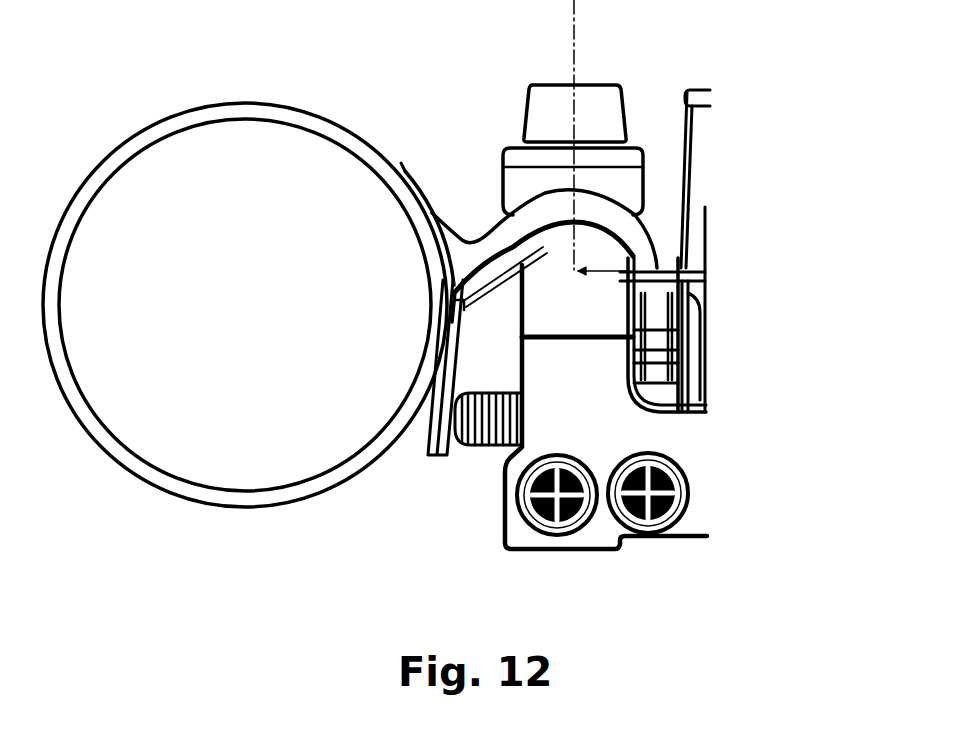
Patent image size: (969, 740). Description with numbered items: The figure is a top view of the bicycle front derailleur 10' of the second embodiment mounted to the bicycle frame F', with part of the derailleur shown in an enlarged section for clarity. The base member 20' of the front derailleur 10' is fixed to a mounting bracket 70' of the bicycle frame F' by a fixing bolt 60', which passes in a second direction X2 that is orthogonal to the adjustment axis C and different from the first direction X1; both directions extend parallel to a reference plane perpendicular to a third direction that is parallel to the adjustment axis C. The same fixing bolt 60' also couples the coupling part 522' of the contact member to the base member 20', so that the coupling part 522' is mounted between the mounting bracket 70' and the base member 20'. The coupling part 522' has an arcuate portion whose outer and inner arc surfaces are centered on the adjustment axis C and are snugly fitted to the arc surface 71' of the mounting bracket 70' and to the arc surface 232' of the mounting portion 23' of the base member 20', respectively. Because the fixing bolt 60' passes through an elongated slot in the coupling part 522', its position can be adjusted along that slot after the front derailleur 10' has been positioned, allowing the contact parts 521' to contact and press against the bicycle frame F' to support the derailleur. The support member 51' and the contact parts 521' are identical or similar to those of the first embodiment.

The bicycle frame F' is at (245, 277).
The mounting bracket 70' is at (529, 221).
The arc surface 71' is at (640, 240).
The fixing bolt 60' is at (584, 114).
The second direction X2 is at (572, 50).
The adjustment axis C is at (630, 271).
The support member 51' is at (579, 427).
The contact part 521' is at (354, 434).
The coupling part 522' is at (604, 351).
The first direction X1 is at (428, 410).
The base member 20' is at (698, 310).
The mounting portion 23' is at (691, 250).
The arc surface 232' is at (775, 346).
The front derailleur 10' is at (808, 243).